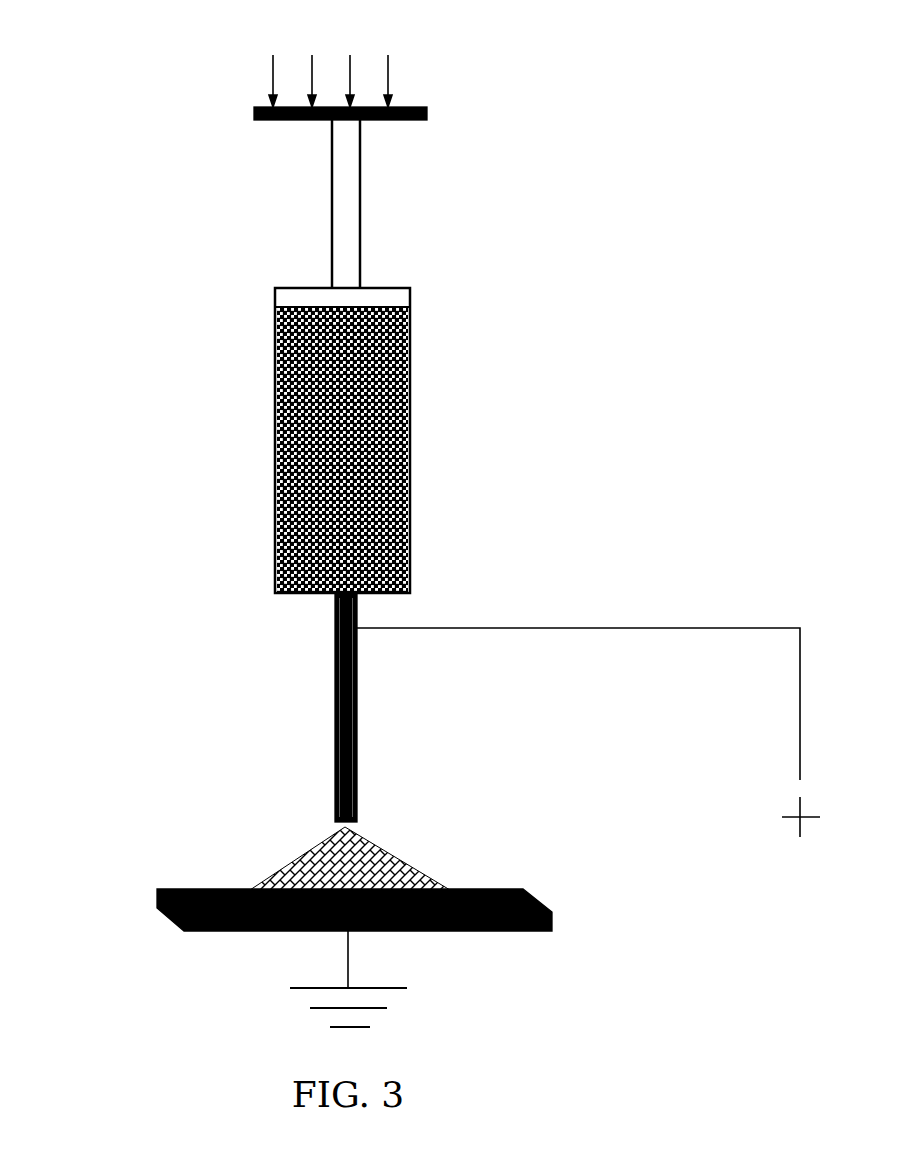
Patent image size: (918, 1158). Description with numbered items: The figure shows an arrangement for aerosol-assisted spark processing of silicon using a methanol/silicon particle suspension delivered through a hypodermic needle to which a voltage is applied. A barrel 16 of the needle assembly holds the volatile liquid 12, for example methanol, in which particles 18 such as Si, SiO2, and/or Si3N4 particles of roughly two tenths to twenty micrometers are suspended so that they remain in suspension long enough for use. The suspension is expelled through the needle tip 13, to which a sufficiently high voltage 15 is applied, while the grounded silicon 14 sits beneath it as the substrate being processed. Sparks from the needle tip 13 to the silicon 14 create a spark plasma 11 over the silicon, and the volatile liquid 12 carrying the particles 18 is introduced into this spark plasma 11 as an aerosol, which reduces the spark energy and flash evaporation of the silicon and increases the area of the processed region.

The spark plasma 11 is at (297, 830).
The volatile liquid 12 is at (286, 338).
The nozzle 13 is at (357, 807).
The silicon 14 is at (140, 923).
The voltage 15 is at (686, 600).
The applied pressure / plunger force 16 is at (340, 152).
The particles 18 is at (313, 502).